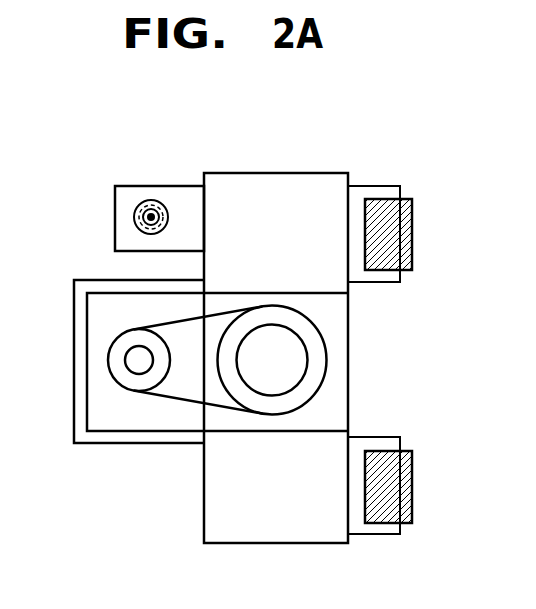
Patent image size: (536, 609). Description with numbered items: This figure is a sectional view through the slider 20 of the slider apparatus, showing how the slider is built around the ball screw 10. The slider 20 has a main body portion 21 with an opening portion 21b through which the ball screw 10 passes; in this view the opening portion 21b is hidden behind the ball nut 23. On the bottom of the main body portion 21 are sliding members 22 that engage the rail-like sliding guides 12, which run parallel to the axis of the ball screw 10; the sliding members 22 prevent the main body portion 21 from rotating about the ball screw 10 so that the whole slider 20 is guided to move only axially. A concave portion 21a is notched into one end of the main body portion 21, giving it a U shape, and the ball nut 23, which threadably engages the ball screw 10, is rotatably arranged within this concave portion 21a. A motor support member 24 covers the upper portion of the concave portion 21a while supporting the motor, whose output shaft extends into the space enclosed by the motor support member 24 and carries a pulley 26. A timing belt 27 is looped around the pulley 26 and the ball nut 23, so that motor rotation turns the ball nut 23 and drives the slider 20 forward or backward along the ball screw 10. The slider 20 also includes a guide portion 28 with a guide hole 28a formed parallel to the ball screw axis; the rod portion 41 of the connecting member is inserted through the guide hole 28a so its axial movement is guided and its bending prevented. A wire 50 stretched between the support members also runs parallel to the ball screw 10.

The ball screw 10 is at (298, 367).
The sliding guides 12 is at (408, 228).
The slider 20 is at (160, 520).
The main body portion 21 is at (298, 172).
The concave portion 21a is at (342, 333).
The opening portion 21b is at (263, 390).
The sliding members 22 is at (388, 186).
The ball nut 23 is at (310, 397).
The motor support member 24 is at (90, 445).
The pulley 26 is at (120, 357).
The timing belt 27 is at (190, 403).
The guide portion 28 is at (177, 188).
The guide hole 28a is at (150, 200).
The rod portion 41 is at (139, 211).
The wire 50 is at (143, 218).